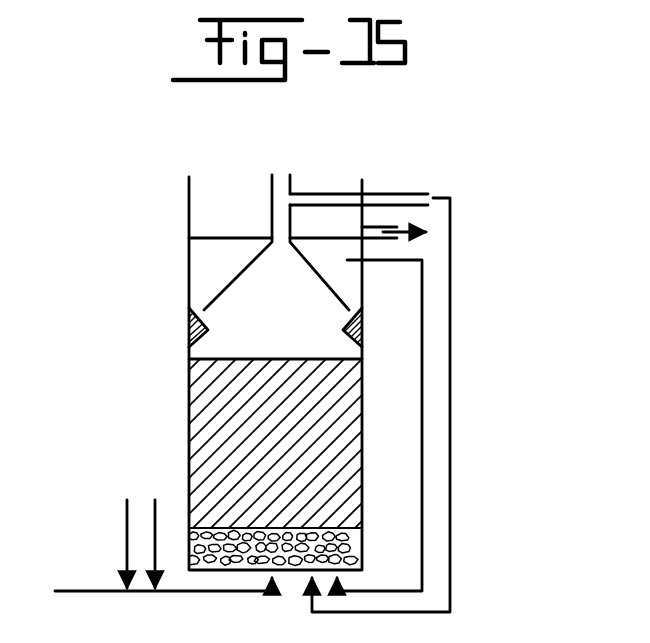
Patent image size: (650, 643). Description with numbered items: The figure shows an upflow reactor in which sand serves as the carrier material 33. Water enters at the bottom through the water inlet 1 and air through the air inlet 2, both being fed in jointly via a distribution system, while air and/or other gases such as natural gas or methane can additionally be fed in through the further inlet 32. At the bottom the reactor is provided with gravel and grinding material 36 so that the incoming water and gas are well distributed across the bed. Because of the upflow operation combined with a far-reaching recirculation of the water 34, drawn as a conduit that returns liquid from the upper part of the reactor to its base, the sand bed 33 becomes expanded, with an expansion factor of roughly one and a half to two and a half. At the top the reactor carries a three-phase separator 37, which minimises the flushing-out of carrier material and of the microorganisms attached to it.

The water inlet 1 is at (63, 590).
The air inlet 2 is at (127, 514).
The additional gas inlet 32 is at (155, 512).
The sand carrier material 33 is at (213, 408).
The recirculation of the water 34 is at (424, 348).
The gravel and grinding material 36 is at (345, 553).
The three-phase separator 37 is at (280, 197).